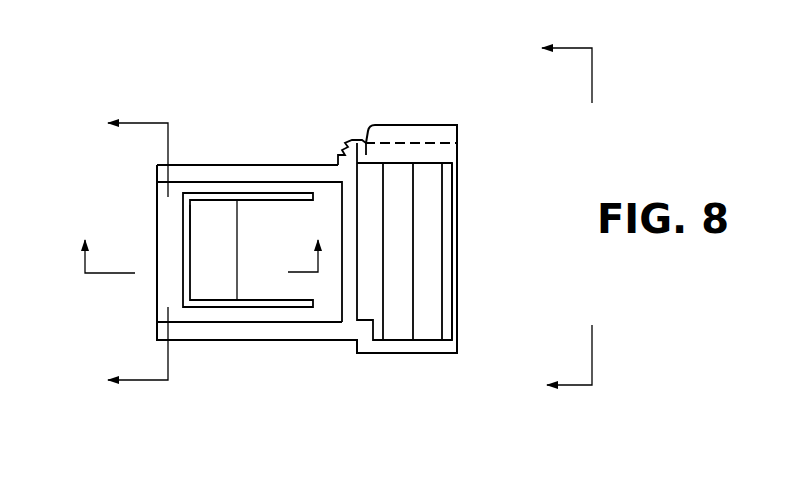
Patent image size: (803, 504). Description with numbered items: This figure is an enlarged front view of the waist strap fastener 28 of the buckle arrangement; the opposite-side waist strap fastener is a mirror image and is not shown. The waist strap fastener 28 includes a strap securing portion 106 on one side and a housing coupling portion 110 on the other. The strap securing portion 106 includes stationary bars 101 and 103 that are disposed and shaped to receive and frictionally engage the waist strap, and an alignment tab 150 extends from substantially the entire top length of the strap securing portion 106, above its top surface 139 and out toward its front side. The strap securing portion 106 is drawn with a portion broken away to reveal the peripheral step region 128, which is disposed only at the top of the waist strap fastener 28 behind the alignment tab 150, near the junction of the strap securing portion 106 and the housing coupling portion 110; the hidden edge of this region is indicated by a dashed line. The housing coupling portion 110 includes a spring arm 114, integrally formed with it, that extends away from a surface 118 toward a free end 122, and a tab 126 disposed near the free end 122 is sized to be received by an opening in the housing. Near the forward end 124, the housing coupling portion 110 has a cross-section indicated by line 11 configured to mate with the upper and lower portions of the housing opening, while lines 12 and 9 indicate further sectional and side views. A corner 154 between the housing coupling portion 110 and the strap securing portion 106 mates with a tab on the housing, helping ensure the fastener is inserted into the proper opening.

The section line 9- 9 is at (565, 217).
The section line 11- 11 is at (180, 254).
The section line 12- 12 is at (131, 254).
The waist strap fastener 28 is at (457, 268).
The stationary bar 101 is at (448, 190).
The stationary bar 103 is at (398, 240).
The strap securing portion 106 is at (474, 298).
The housing coupling portion 110 is at (214, 356).
The spring arm 114 is at (267, 282).
The surface 118 is at (292, 230).
The free end 122 is at (190, 222).
The forward end 124 is at (157, 202).
The tab 126 is at (202, 277).
The peripheral step region 128 is at (321, 133).
The top surface 139 is at (382, 143).
The alignment tab 150 is at (443, 125).
The corner 154 is at (349, 352).